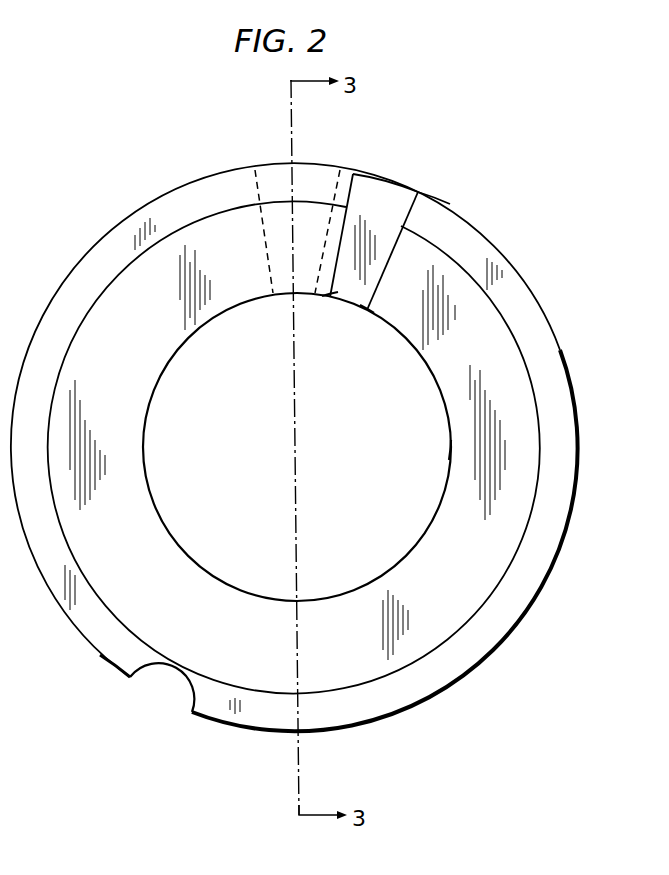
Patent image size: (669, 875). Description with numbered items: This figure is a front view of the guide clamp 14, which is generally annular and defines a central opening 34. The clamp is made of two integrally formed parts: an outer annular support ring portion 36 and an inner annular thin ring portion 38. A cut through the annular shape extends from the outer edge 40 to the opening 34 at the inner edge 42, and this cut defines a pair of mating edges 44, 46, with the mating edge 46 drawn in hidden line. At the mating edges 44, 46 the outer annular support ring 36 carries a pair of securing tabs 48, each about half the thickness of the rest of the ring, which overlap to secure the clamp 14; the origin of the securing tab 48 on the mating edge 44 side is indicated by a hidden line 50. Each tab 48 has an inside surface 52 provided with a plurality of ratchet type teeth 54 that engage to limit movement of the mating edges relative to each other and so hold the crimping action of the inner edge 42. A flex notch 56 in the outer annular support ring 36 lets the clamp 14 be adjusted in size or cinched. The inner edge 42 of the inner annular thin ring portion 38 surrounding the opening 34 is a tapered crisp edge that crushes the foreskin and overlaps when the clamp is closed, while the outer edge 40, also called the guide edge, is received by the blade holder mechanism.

The guide clamp 14 is at (552, 184).
The opening 34 is at (349, 394).
The outer annular support ring portion 36 is at (540, 333).
The inner annular thin ring portion 38 is at (482, 563).
The outer edge 40 is at (518, 277).
The inner edge 42 is at (448, 442).
The mating edge 44 is at (377, 198).
The mating edge 46 is at (340, 165).
The securing tabs 48 is at (403, 202).
The hidden line 50 is at (271, 168).
The inside surface 52 is at (285, 283).
The ratchet type teeth 54 is at (415, 192).
The flex notch 56 is at (166, 673).